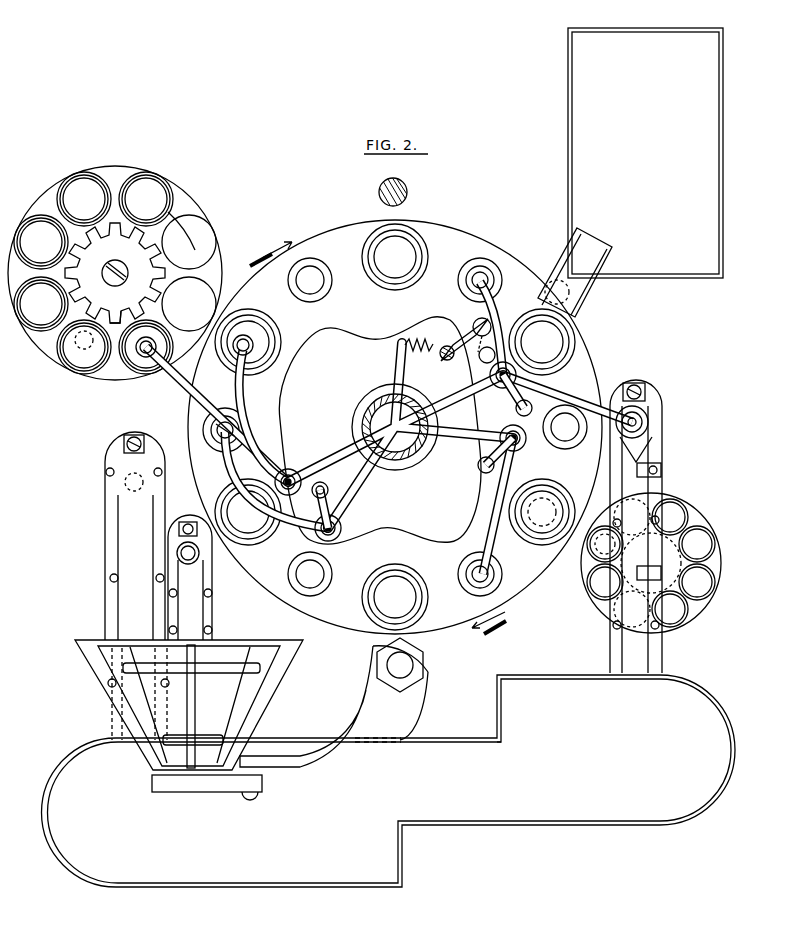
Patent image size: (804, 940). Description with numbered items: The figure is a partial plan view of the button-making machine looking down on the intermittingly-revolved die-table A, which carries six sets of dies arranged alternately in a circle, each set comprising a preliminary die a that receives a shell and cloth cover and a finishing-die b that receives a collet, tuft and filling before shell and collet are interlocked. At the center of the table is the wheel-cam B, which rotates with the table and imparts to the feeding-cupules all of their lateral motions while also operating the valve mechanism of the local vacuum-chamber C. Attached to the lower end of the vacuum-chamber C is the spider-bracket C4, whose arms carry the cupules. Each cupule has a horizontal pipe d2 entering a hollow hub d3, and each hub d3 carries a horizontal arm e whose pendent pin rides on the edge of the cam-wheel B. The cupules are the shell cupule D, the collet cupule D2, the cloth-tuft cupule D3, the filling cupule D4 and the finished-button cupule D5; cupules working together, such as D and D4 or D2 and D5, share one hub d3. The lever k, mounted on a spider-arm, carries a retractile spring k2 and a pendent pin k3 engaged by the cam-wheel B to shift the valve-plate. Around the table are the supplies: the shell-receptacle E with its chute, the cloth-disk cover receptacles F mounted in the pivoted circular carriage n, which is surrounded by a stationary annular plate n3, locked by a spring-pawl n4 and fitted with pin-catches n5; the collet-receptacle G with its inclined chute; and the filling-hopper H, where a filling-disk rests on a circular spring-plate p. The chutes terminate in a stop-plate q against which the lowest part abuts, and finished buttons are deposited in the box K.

The pivoted circular carriage n is at (115, 273).
The stationary annular plate n3 is at (204, 280).
The spring-pawl n4 is at (115, 322).
The pin-catches n5 is at (210, 232).
The cloth-disk cover receptacle F is at (99, 273).
The die-table A is at (395, 427).
The wheel-cam B is at (380, 430).
The local vacuum-chamber C is at (395, 427).
The spider-bracket C4 is at (400, 435).
The preliminary die a is at (395, 427).
The finishing-die b is at (503, 574).
The horizontal pipe d2 is at (389, 428).
The hollow hub d3 is at (406, 451).
The horizontal arm e is at (418, 451).
The lever k is at (462, 320).
The retractile spring k2 is at (419, 338).
The rigid pendent pin k3 is at (480, 358).
The shell-feeding cupule D is at (197, 346).
The collet-feeding cupule D2 is at (650, 422).
The cloth-tuft disk cupule D3 is at (488, 580).
The filling-disk cupule D4 is at (225, 420).
The finished-button removing cupule D5 is at (478, 275).
The finished-button box K is at (630, 172).
The stop-plate q is at (638, 388).
The circular spring-plate p is at (186, 533).
The filling-hopper H is at (189, 712).
The shell-receptacle E is at (389, 781).
The collet-receptacle G is at (556, 752).